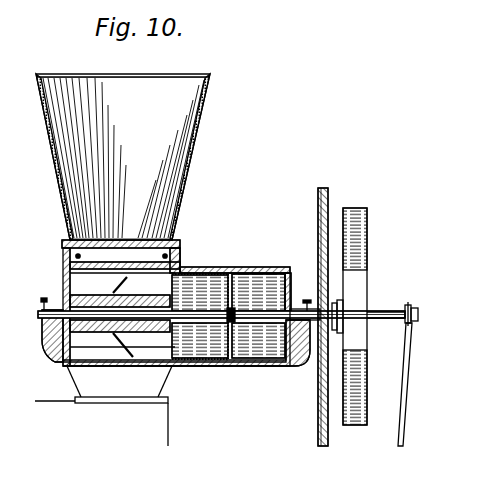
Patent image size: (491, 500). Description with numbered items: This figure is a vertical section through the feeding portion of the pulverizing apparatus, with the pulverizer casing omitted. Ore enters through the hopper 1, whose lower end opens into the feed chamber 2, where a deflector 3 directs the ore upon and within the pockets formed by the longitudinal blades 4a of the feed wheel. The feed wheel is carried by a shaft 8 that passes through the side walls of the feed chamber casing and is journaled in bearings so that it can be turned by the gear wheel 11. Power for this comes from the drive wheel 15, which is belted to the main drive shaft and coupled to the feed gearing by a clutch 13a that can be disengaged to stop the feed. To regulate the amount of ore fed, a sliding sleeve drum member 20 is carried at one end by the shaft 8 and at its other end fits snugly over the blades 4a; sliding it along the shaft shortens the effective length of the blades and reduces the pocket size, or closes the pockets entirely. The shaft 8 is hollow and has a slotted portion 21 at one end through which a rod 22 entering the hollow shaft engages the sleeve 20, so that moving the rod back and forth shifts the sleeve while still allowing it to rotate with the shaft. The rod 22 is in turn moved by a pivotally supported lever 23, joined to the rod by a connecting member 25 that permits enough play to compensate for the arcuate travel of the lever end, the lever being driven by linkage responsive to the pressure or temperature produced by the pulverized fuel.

The hopper 1 is at (203, 120).
The feed chamber 2 is at (80, 275).
The deflector 3 is at (70, 262).
The longitudinal blades 4a is at (90, 340).
The shaft 8 is at (314, 310).
The gear wheel 11 is at (328, 196).
The clutch 13a is at (338, 308).
The drive wheel 15 is at (367, 216).
The sliding sleeve drum member 20 is at (205, 273).
The slotted portion 21 is at (222, 318).
The rod 22 is at (380, 313).
The lever 23 is at (408, 360).
The connecting member 25 is at (411, 305).